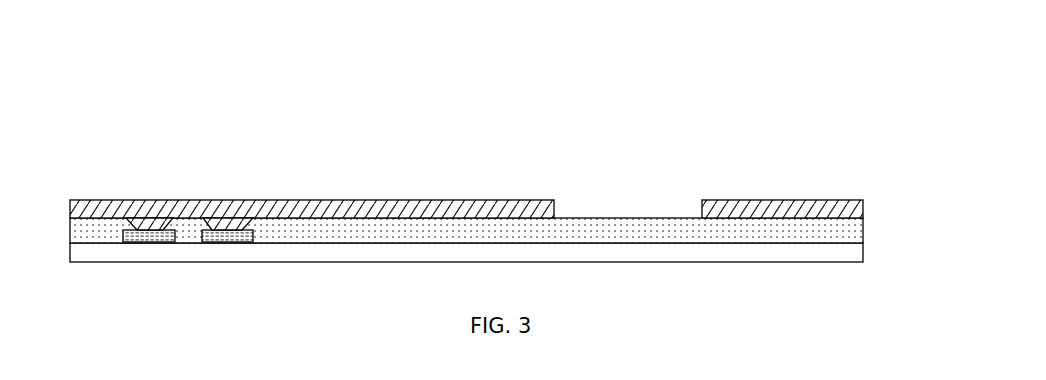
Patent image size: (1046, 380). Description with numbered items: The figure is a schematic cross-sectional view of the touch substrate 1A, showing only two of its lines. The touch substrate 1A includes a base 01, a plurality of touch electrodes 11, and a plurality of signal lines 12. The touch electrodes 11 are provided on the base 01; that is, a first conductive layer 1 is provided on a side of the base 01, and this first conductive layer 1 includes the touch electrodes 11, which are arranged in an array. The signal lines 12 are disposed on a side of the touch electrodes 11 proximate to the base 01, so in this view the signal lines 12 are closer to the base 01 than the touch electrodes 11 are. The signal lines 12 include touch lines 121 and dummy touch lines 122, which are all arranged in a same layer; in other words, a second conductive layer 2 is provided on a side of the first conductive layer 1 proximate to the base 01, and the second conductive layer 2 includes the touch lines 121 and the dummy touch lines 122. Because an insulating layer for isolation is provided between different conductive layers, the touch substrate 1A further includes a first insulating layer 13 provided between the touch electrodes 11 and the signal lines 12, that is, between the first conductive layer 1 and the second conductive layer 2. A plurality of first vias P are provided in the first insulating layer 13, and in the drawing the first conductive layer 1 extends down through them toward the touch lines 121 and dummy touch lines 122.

The touch substrate 1A is at (818, 126).
The first conductive layer 1 is at (501, 182).
The touch electrodes 11 is at (365, 208).
The first insulating layer 13 is at (840, 235).
The base 01 is at (840, 253).
The second conductive layer 2 is at (180, 156).
The signal lines 12 is at (180, 173).
The touch lines 121 is at (148, 235).
The dummy touch lines 122 is at (220, 235).
The first vias P is at (212, 232).